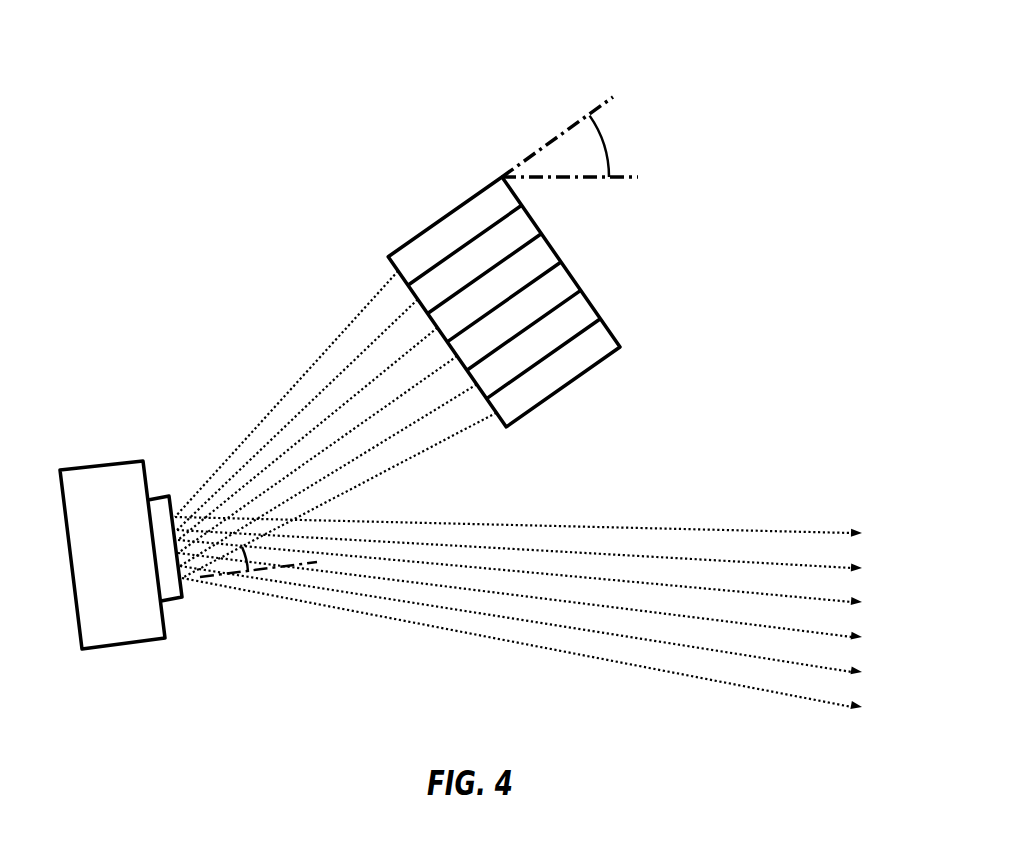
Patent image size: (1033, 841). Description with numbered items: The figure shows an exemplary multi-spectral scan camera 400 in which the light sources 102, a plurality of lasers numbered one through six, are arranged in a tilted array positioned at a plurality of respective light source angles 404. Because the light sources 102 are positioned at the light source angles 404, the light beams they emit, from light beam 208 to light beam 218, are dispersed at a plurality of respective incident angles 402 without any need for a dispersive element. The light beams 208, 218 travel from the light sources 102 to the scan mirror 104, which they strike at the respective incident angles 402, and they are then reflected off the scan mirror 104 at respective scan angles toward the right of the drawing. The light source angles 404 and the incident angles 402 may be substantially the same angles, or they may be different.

The multi-spectral scan camera 400 is at (616, 53).
The light sources 102 is at (430, 213).
The scan mirror 104 is at (102, 465).
The light beam 208 is at (518, 504).
The light beam 218 is at (440, 442).
The incident angles 402 is at (243, 553).
The light source angles 404 is at (607, 145).